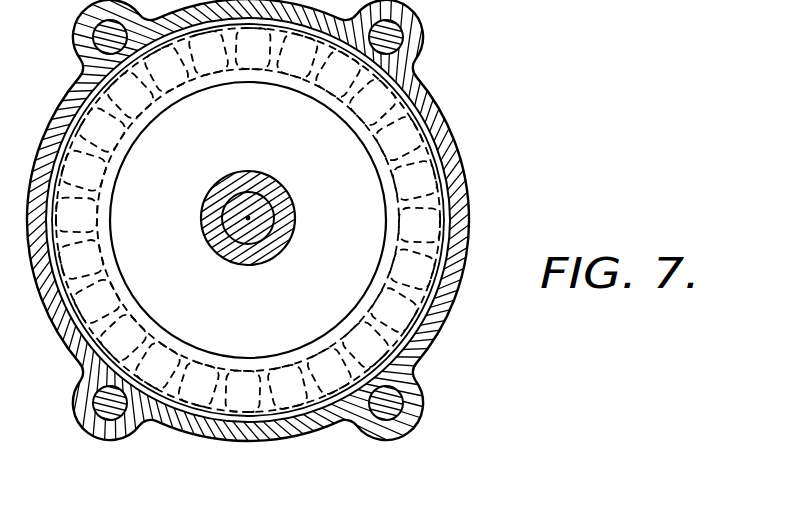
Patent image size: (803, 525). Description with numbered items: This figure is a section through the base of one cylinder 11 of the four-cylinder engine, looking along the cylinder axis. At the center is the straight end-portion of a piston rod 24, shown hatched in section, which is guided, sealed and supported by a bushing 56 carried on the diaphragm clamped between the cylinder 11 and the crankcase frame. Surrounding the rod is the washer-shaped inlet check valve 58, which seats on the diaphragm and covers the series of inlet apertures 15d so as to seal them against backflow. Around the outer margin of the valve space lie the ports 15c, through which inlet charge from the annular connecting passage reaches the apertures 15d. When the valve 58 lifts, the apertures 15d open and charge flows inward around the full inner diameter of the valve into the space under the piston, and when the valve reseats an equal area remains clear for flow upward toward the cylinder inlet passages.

The cylinder 11 is at (445, 130).
The port 15c is at (391, 347).
The aperture 15d is at (405, 303).
The piston rod 24 is at (266, 209).
The bushing 56 is at (290, 228).
The inlet check valve 58 is at (388, 270).